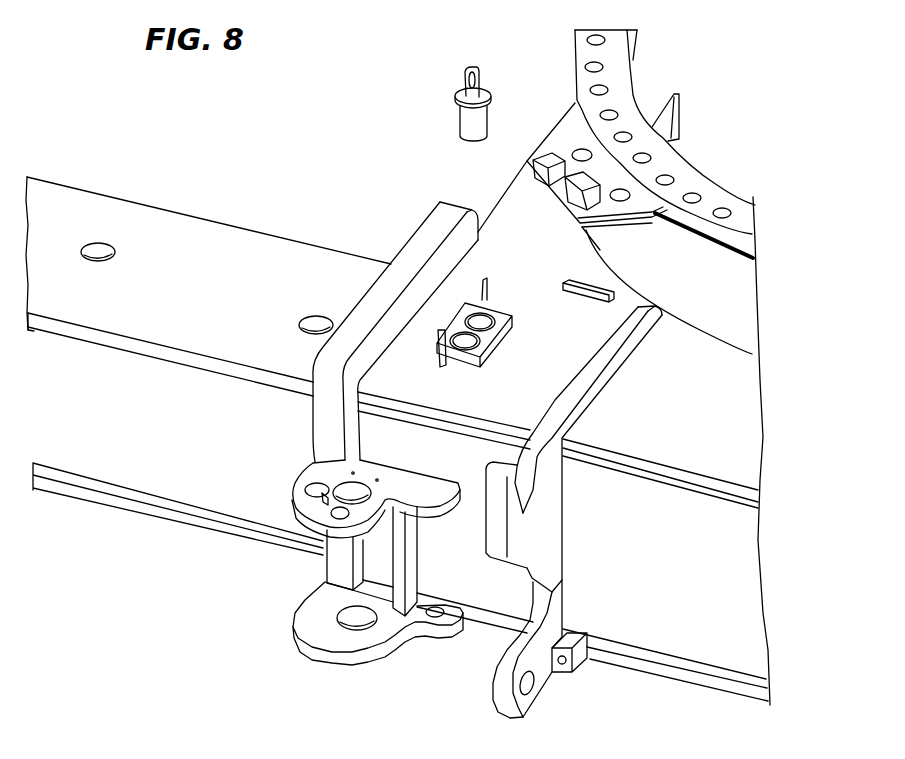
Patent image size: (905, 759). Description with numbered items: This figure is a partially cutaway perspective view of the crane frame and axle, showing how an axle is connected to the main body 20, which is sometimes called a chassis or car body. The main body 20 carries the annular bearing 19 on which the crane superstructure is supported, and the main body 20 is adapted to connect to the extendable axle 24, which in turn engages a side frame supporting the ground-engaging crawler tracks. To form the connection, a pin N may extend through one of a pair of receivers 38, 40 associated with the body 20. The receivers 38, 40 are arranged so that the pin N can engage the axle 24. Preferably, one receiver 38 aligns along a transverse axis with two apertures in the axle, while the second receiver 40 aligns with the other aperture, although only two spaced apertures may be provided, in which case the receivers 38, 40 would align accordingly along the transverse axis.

The annular bearing 19 is at (700, 295).
The main body 20 is at (687, 584).
The extendable axle 24 is at (218, 222).
The receiver 38 is at (483, 347).
The receiver 40 is at (505, 326).
The pin N is at (462, 117).